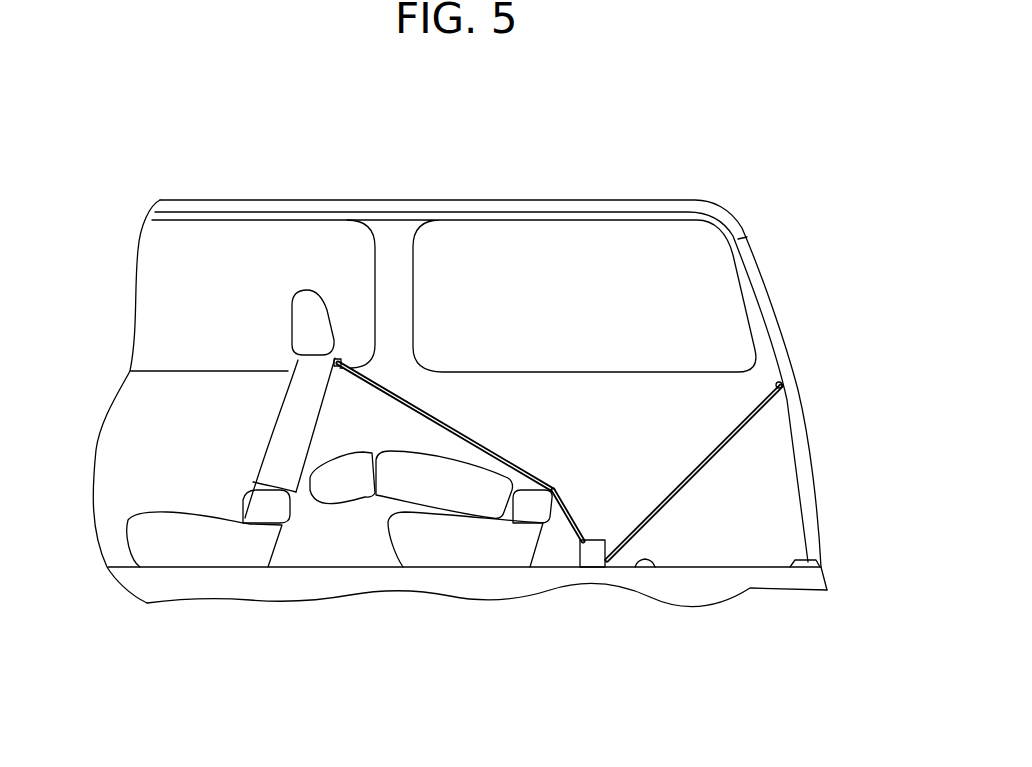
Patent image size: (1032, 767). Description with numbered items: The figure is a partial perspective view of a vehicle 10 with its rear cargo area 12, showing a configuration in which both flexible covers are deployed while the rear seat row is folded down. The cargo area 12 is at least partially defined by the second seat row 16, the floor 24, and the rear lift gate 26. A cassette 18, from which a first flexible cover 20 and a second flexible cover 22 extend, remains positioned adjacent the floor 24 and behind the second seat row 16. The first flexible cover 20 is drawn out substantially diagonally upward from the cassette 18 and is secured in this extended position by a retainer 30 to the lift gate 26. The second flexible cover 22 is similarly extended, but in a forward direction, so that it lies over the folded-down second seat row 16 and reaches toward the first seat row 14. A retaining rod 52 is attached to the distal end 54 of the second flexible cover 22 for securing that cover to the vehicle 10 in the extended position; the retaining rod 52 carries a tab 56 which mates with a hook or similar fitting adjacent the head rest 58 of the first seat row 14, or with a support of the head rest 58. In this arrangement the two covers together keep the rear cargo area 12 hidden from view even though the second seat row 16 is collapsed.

The vehicle 10 is at (231, 162).
The rear cargo area 12 is at (765, 503).
The first seat row 14 is at (163, 512).
The second seat row 16 is at (387, 542).
The cassette 18 is at (590, 560).
The first flexible cover 20 is at (673, 497).
The second flexible cover 22 is at (395, 396).
The floor 24 is at (650, 561).
The rear lift gate 26 is at (808, 452).
The retainer 30 is at (782, 384).
The retaining rod 52 is at (345, 361).
The distal end 54 is at (395, 396).
The tab 56 is at (341, 360).
The head rest 58 is at (290, 324).